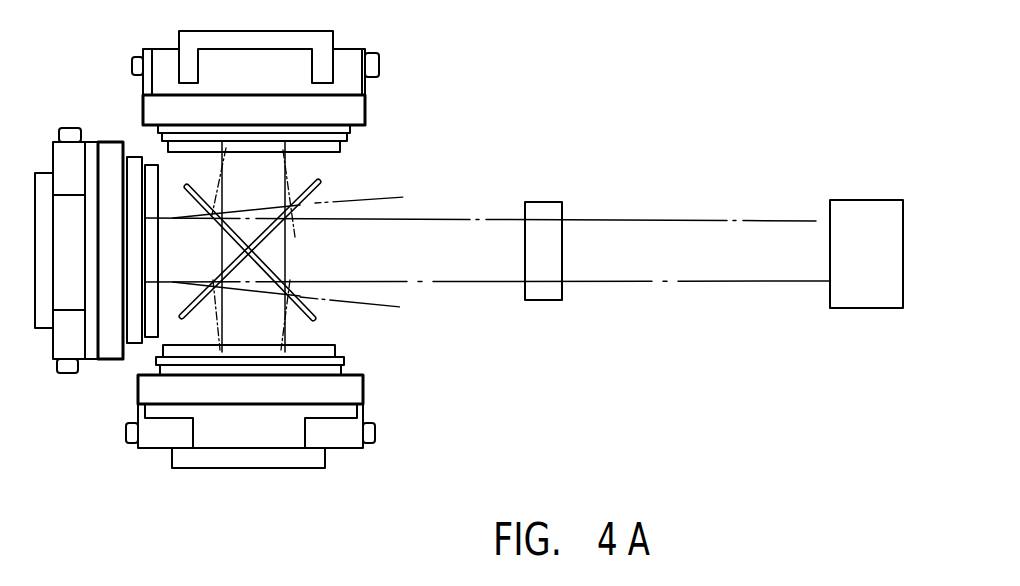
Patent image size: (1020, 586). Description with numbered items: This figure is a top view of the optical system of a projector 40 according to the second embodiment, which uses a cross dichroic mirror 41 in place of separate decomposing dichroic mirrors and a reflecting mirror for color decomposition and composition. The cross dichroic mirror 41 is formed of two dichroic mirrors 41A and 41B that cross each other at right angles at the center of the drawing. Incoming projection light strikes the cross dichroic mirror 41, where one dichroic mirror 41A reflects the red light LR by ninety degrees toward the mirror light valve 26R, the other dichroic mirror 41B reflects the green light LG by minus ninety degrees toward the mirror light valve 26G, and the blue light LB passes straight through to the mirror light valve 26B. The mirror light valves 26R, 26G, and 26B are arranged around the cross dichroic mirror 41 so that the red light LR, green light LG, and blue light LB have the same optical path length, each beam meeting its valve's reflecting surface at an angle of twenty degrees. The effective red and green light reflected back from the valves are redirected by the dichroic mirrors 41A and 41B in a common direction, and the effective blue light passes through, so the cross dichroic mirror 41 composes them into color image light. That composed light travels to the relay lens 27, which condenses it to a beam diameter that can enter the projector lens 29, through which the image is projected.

The projector 40 is at (469, 270).
The mirror light valve 26R is at (345, 74).
The mirror light valve 26G is at (248, 428).
The mirror light valve 26B is at (107, 345).
The red light LR is at (258, 178).
The green light LG is at (253, 325).
The blue light LB is at (173, 247).
The cross dichroic mirror 41 is at (320, 245).
The dichroic mirror 41A is at (323, 190).
The dichroic mirror 41B is at (315, 312).
The relay lens 27 is at (541, 290).
The projector lens 29 is at (863, 293).